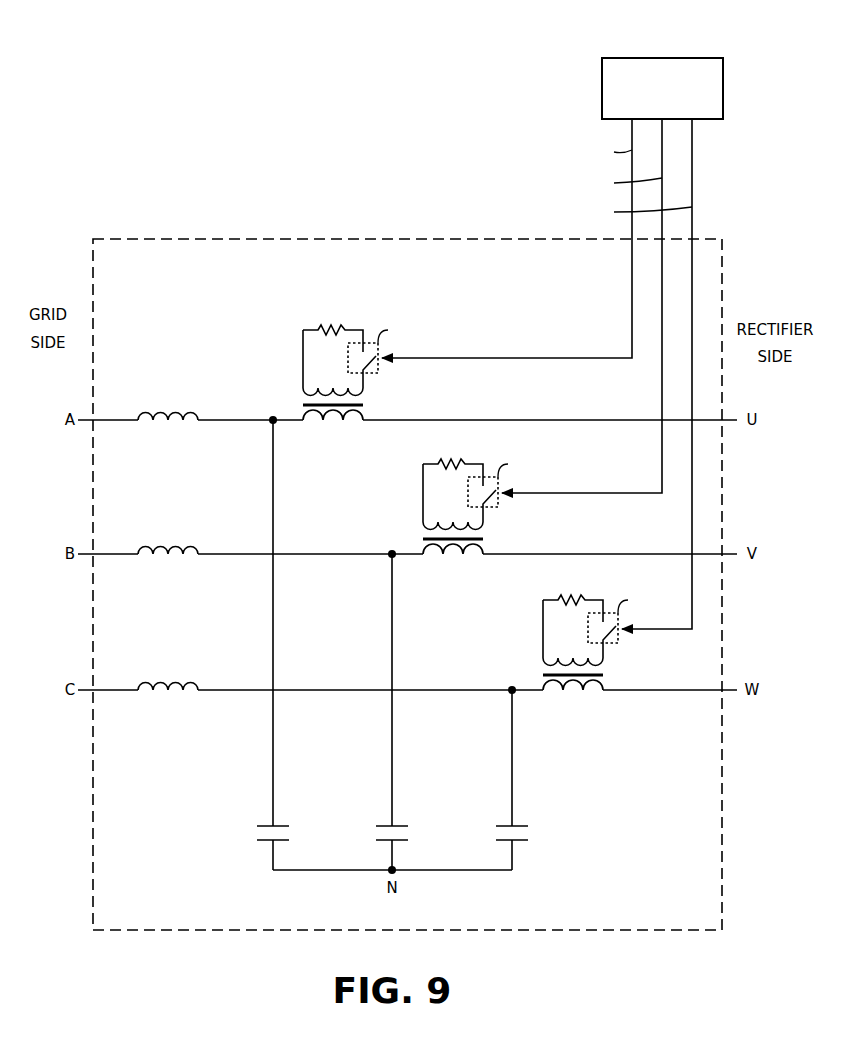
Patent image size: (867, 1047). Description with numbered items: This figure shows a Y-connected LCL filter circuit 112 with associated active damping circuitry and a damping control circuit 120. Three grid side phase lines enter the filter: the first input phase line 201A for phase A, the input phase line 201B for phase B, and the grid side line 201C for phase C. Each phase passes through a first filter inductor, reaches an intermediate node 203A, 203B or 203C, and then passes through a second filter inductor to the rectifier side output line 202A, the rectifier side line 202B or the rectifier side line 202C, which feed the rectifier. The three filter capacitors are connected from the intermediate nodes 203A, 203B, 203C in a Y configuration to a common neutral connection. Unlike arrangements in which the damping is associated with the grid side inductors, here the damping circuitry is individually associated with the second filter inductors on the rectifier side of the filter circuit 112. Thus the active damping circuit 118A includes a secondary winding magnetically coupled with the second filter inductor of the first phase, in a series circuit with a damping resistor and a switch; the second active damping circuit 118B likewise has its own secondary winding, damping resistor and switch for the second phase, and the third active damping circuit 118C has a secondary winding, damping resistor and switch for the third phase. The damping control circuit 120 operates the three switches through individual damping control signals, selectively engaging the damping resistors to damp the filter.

The LCL filter circuit 112 is at (393, 238).
The damping control circuit 120 is at (661, 58).
The active damping circuit 118A is at (366, 365).
The second active damping circuit 118B is at (491, 504).
The third active damping circuit 118C is at (613, 639).
The first input phase line 201A is at (108, 420).
The input phase line 201B is at (108, 554).
The grid side line 201C is at (108, 690).
The rectifier side output line 202A is at (647, 419).
The rectifier side line 202B is at (662, 553).
The rectifier side line 202C is at (675, 689).
The intermediate node 203A is at (273, 735).
The intermediate node 203B is at (392, 735).
The intermediate node 203C is at (512, 735).